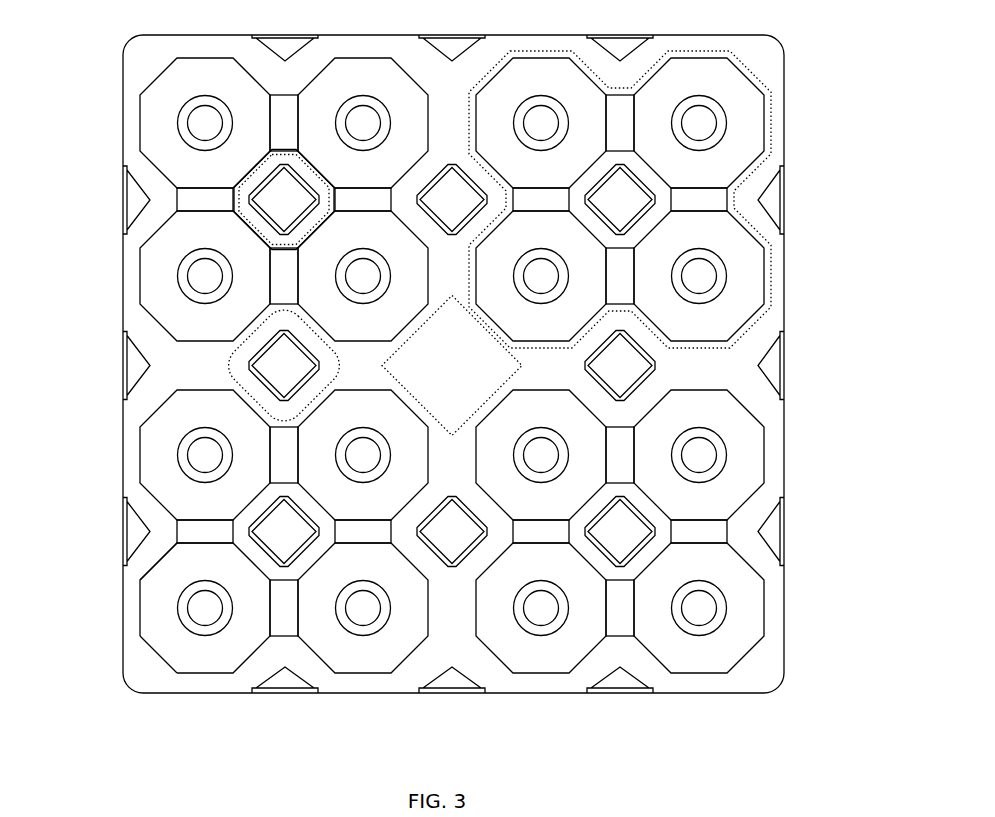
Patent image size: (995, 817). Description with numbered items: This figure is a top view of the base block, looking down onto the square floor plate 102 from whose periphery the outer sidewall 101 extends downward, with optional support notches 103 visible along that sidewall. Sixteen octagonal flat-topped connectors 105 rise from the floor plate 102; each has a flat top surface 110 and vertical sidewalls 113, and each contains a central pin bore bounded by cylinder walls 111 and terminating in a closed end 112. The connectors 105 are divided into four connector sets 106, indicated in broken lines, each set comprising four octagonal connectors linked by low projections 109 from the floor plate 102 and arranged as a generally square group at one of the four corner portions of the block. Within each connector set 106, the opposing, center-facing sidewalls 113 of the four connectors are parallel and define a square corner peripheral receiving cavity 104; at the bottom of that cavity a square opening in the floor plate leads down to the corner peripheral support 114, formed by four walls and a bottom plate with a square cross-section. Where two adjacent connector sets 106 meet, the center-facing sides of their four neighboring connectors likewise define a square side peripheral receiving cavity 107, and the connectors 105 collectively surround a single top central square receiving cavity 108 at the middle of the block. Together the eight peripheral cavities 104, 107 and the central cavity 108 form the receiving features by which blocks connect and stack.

The outer sidewall 101 is at (370, 694).
The floor plate 102 is at (502, 678).
The support notches 103 is at (450, 686).
The corner peripheral receiving cavity 104 is at (252, 177).
The octagonal flat-topped connector 105 is at (158, 645).
The connector set 106 is at (758, 72).
The side peripheral receiving cavity 107 is at (229, 358).
The top central square receiving cavity 108 is at (428, 313).
The low projections 109 is at (287, 628).
The top surface 110 is at (223, 658).
The cylinder walls 111 is at (207, 638).
The closed end 112 is at (205, 614).
The vertical sidewalls 113 is at (156, 565).
The corner peripheral support 114 is at (264, 211).